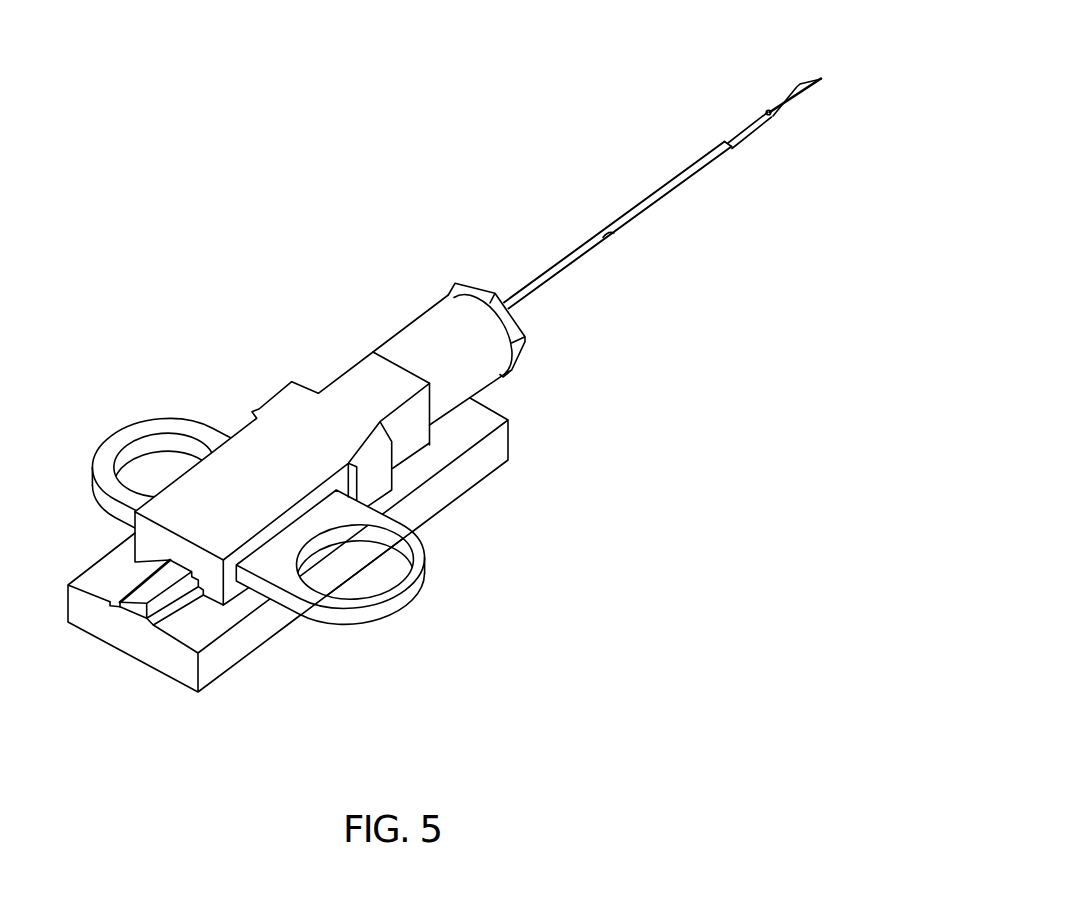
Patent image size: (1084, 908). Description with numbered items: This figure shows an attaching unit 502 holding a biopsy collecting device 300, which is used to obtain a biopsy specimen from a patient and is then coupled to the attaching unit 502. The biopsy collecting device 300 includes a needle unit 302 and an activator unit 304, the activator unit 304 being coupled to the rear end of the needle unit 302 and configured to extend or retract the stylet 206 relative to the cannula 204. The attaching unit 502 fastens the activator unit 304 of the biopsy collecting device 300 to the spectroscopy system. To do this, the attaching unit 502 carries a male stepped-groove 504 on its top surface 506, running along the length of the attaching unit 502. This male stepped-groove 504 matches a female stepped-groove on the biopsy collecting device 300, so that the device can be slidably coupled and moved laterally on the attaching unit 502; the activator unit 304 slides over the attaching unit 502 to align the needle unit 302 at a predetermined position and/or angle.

The cannula 204 is at (597, 238).
The stylet 206 is at (774, 94).
The biopsy collecting device 300 is at (420, 290).
The needle unit 302 is at (697, 217).
The activator unit 304 is at (368, 223).
The attaching unit 502 is at (471, 490).
The male stepped-groove 504 is at (145, 591).
The top surface 506 is at (85, 580).